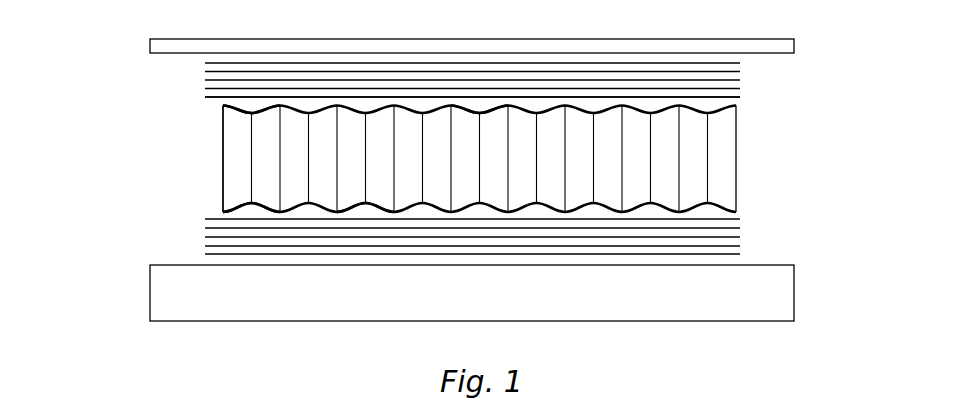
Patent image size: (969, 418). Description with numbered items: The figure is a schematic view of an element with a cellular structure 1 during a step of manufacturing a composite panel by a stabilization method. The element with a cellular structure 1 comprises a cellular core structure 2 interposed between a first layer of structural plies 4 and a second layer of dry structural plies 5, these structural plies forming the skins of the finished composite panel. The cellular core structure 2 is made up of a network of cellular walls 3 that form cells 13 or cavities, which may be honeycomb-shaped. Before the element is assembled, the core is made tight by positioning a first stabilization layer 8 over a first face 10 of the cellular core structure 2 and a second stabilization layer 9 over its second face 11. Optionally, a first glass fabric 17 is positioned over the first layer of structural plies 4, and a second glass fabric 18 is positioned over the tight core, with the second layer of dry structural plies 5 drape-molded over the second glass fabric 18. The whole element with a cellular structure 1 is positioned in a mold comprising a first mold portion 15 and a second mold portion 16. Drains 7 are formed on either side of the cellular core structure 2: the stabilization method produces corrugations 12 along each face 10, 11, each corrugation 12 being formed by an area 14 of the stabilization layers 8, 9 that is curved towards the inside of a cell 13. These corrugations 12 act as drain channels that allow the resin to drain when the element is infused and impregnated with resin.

The element with a cellular structure 1 is at (101, 132).
The cellular core structure 2 is at (742, 170).
The cellular walls 3 is at (233, 172).
The first layer of structural plies 4 is at (747, 234).
The second layer of dry structural plies 5 is at (748, 79).
The drains 7 is at (725, 114).
The first stabilization layer 8 is at (222, 204).
The second stabilization layer 9 is at (222, 113).
The first face 10 is at (369, 216).
The second face 11 is at (389, 93).
The corrugations 12 is at (603, 215).
The cells 13 is at (472, 118).
The area of the stabilization layers 14 is at (299, 196).
The first mold portion 15 is at (800, 294).
The second mold portion 16 is at (800, 44).
The first glass fabric 17 is at (207, 217).
The second glass fabric 18 is at (749, 100).